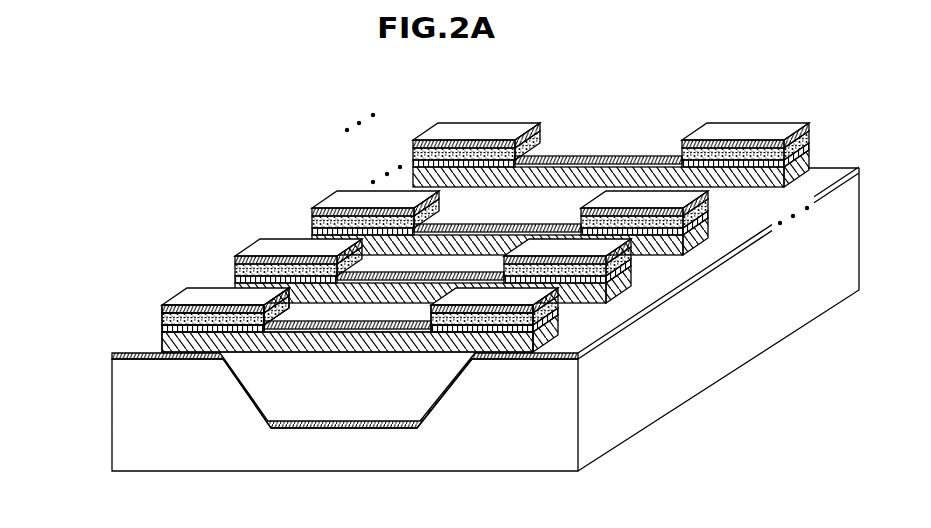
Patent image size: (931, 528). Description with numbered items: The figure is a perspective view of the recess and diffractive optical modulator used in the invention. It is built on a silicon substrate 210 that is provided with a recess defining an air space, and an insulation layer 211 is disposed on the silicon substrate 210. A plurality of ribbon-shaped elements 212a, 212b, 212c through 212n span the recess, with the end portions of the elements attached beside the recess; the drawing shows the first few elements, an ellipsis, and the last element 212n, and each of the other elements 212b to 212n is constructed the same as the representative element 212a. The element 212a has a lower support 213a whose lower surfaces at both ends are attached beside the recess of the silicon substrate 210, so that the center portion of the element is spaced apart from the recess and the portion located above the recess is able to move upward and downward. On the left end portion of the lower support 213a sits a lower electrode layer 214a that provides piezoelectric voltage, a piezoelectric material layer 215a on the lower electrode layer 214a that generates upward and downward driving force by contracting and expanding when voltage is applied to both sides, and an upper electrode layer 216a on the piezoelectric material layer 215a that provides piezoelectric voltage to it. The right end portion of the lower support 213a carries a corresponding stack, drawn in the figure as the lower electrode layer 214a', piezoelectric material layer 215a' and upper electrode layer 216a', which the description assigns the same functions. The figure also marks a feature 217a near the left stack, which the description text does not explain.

The silicon substrate 210 is at (112, 413).
The insulation layer 211 is at (112, 353).
The element 212a is at (83, 281).
The element 212b is at (251, 246).
The element 212c is at (328, 198).
The element 212n is at (426, 131).
The lower support 213a is at (162, 342).
The lower electrode layer 214a is at (174, 321).
The piezoelectric material layer 215a is at (174, 310).
The upper electrode layer 216a is at (174, 297).
The separation region 217a is at (281, 310).
The first organic layer extension 214a' is at (565, 395).
The organic emission layer extension 215a' is at (578, 380).
The second electrode extension 216a' is at (586, 365).